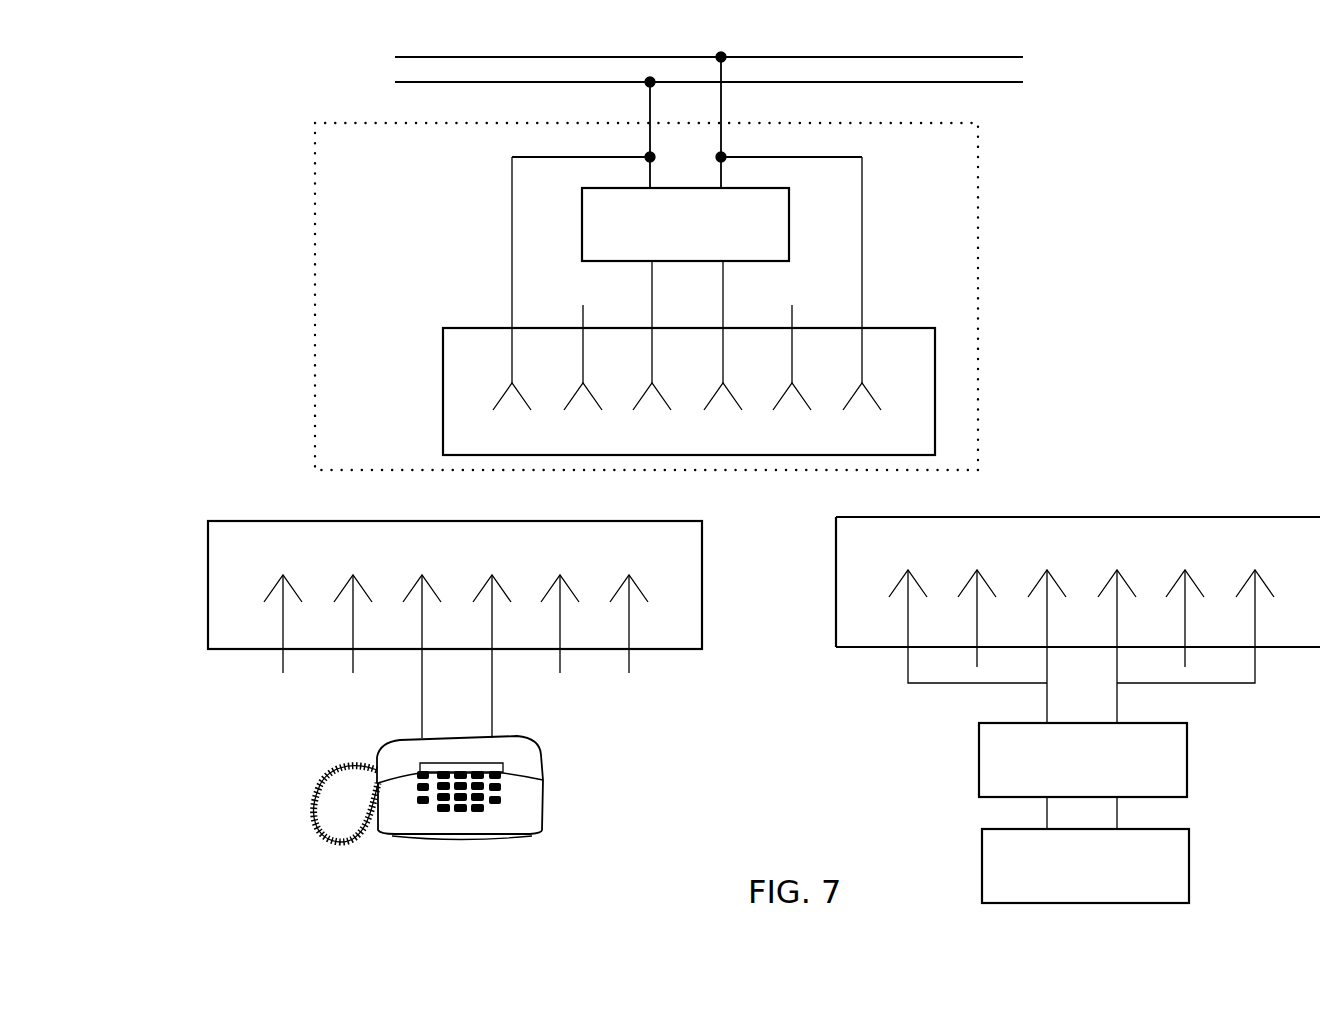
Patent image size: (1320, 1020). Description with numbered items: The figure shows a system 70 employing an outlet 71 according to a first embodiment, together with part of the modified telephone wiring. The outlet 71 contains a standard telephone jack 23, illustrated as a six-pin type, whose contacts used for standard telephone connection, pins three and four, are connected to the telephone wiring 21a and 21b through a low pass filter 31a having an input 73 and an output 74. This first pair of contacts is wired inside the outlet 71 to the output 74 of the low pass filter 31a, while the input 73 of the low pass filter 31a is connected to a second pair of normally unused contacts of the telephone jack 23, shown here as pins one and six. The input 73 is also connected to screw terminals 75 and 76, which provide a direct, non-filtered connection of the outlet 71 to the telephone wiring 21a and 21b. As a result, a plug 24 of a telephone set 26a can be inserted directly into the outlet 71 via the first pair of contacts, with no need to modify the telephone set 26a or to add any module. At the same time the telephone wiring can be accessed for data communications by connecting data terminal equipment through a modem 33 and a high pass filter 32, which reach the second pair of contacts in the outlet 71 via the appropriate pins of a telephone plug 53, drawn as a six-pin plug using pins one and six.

The telephone wiring 21a is at (957, 57).
The telephone wiring 21b is at (998, 82).
The system 70 is at (1155, 202).
The outlet 71 is at (978, 305).
The screw terminal 75 is at (648, 157).
The screw terminal 76 is at (722, 157).
The input 73 is at (723, 186).
The output 74 is at (726, 262).
The low pass filter 31a is at (582, 228).
The telephone jack 23 is at (443, 393).
The plug 24 is at (208, 588).
The telephone set 26a is at (545, 805).
The telephone plug 53 is at (836, 565).
The high pass filter 32 is at (979, 762).
The modem 33 is at (982, 868).